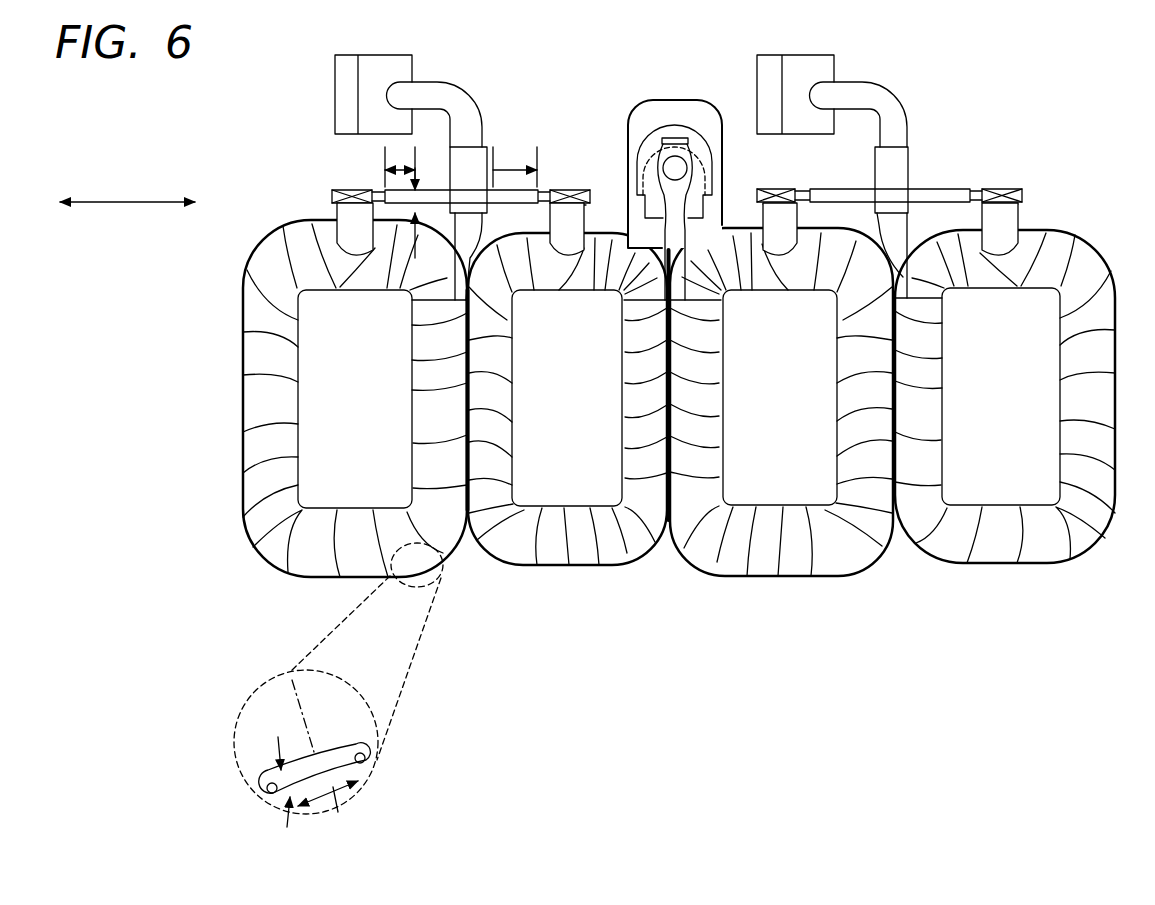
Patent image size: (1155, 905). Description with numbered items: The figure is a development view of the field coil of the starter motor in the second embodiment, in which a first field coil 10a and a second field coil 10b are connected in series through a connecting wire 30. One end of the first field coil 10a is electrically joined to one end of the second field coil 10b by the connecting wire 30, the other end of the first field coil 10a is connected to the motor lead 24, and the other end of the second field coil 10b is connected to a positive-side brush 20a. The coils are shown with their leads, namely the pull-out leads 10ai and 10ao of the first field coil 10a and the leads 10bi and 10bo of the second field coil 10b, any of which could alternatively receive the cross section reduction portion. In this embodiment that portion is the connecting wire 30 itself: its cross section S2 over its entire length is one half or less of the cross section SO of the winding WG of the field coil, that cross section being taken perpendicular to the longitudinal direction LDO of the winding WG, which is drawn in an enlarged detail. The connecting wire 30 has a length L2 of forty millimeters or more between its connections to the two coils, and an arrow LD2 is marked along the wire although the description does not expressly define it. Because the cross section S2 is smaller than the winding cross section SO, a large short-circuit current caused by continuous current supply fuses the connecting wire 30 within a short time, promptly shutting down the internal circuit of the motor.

The first field coil 10a is at (633, 553).
The second field coil 10b is at (308, 570).
The positive-side brush 20a is at (398, 60).
The connecting wire 30 is at (500, 185).
The lead of second field coil 10bi is at (340, 218).
The pull-out lead of first field coil 10ao is at (588, 215).
The lead of second field coil 10bo is at (470, 228).
The pull-out lead of first field coil 10ai is at (678, 138).
The motor lead 24 is at (672, 166).
The cross section of connecting wire S2 is at (414, 202).
The length of connecting wire L2 is at (513, 170).
The lead direction LD2 is at (127, 188).
The winding WG is at (340, 758).
The cross section of winding SO is at (275, 741).
The longitudinal direction of winding LDO is at (360, 786).